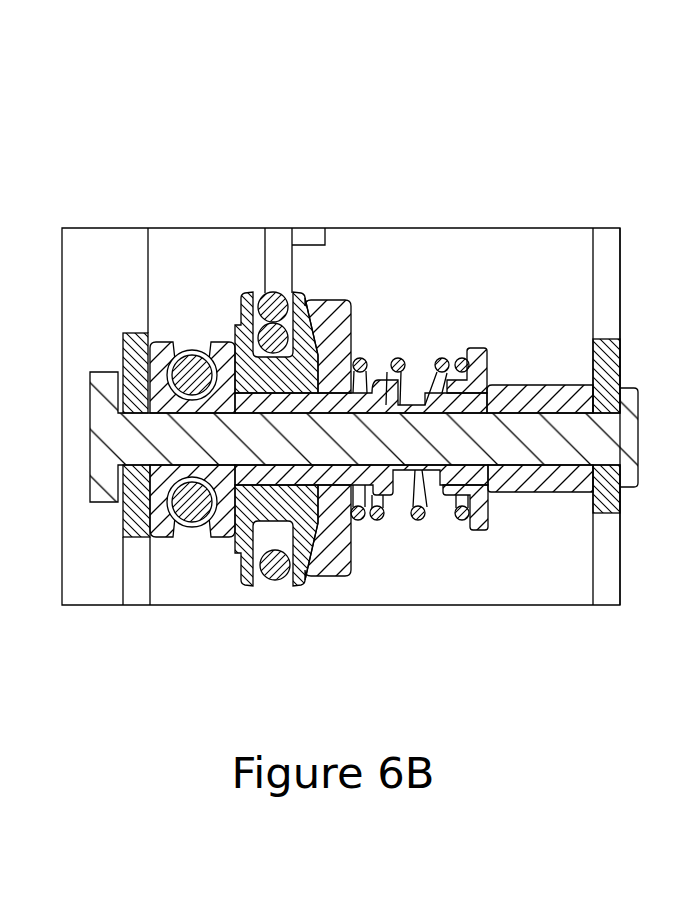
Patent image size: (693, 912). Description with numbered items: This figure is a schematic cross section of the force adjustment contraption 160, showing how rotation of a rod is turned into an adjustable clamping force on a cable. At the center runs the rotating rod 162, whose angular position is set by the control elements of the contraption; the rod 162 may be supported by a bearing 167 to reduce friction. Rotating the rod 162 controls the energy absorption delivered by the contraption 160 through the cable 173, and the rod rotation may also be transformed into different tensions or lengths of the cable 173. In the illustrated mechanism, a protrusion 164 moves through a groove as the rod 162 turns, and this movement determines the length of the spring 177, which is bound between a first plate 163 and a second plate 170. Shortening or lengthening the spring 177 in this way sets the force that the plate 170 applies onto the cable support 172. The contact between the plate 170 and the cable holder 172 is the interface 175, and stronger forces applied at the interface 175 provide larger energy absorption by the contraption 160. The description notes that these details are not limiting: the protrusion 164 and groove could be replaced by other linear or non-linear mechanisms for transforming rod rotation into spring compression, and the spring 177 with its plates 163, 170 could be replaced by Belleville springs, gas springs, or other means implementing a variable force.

The force adjustment contraption 160 is at (573, 61).
The rod 162 is at (603, 435).
The plate 163 is at (477, 387).
The protrusion 164 is at (553, 468).
The bearing 167 is at (222, 353).
The plate 170 is at (337, 537).
The cable support 172 is at (245, 558).
The cable 173 is at (273, 300).
The interface 175 is at (312, 327).
The spring 177 is at (438, 358).